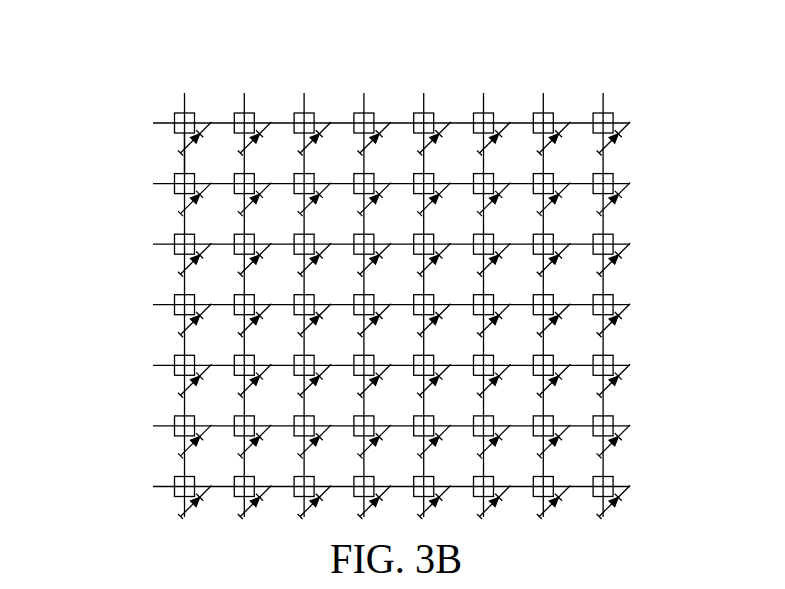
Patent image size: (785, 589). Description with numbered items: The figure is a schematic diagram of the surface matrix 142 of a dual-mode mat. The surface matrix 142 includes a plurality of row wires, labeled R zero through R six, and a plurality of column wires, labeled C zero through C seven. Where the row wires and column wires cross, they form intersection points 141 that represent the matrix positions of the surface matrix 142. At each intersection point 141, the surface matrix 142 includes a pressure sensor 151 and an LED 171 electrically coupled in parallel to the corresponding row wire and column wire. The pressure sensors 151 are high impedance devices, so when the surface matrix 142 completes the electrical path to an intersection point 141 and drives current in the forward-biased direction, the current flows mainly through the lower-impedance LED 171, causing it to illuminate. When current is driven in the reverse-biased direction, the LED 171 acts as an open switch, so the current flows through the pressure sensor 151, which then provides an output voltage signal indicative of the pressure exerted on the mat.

The intersection point 141 is at (181, 120).
The surface matrix 142 is at (731, 130).
The pressure sensor 151 is at (231, 88).
The LED 171 is at (110, 146).